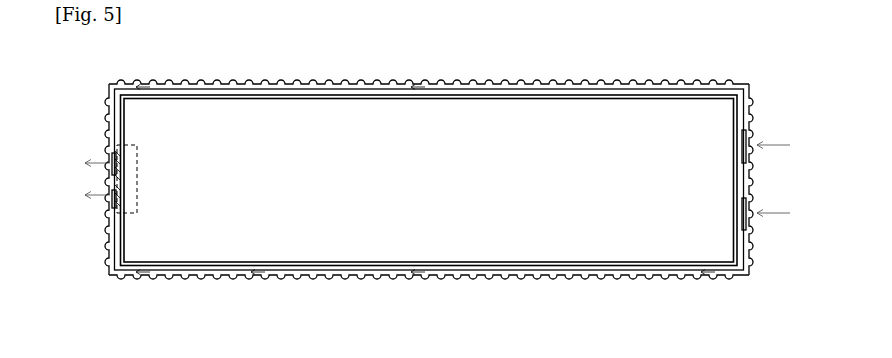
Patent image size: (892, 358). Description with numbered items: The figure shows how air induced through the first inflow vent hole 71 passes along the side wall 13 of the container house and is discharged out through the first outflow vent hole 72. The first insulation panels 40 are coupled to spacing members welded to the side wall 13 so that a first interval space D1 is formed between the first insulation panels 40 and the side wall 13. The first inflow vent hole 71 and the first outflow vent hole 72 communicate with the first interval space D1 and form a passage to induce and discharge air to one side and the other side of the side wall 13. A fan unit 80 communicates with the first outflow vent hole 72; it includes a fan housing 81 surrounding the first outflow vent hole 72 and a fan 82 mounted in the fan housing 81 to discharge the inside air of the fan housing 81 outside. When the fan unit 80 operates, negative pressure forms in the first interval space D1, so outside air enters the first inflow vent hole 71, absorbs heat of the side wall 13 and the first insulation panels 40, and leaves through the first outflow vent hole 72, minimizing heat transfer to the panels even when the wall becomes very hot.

The side wall 13 is at (462, 85).
The first insulation panel 40 is at (526, 95).
The first interval space D1 is at (364, 86).
The first inflow vent hole 71 is at (753, 143).
The first outflow vent hole 72 is at (113, 156).
The fan unit 80 is at (192, 175).
The fan housing 81 is at (137, 178).
The fan 82 is at (122, 196).